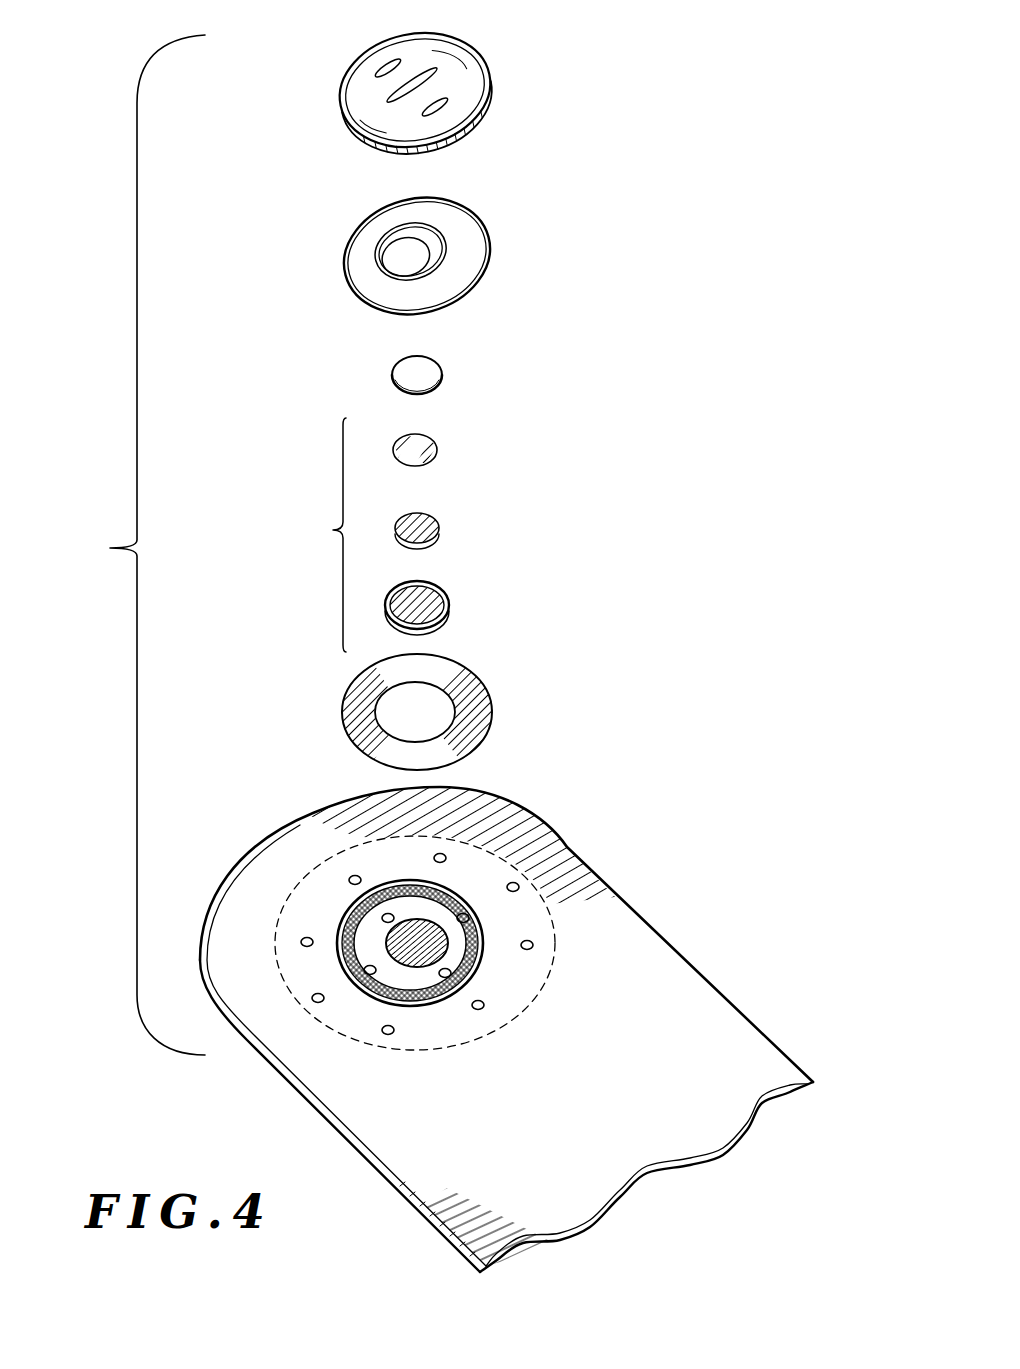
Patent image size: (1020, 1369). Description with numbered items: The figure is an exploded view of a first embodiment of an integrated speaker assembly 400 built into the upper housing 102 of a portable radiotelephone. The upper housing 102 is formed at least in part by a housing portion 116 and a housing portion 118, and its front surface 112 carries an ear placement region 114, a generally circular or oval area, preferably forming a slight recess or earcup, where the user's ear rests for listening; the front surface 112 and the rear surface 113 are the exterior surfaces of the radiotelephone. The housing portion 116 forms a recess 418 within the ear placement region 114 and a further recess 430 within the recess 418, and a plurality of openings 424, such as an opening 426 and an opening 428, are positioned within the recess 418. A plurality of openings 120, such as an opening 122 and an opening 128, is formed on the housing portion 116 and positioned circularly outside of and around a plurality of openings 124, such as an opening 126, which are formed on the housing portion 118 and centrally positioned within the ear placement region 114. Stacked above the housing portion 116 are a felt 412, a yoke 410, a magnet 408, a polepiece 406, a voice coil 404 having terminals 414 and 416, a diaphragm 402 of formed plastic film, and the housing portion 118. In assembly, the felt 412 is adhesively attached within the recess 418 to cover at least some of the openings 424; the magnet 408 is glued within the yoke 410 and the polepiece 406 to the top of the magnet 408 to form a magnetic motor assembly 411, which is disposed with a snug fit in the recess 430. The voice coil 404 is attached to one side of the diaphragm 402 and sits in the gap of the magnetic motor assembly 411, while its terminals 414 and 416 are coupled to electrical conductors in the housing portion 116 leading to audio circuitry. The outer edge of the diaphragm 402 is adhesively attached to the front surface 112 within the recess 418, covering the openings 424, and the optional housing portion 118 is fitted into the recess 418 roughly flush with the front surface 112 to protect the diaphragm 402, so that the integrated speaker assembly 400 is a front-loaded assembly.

The upper housing 102 is at (495, 1029).
The front surface 112 is at (248, 883).
The rear surface 113 is at (279, 1072).
The ear placement region 114 is at (550, 953).
The housing portion 116 is at (365, 1123).
The housing portion 118 is at (431, 83).
The plurality of openings 120 is at (305, 939).
The opening 122 is at (352, 877).
The plurality of openings 124 is at (421, 64).
The opening 126 is at (385, 63).
The opening 128 is at (485, 1003).
The integrated speaker assembly 400 is at (100, 560).
The diaphragm 402 is at (488, 230).
The voice coil 404 is at (420, 377).
The polepiece 406 is at (437, 451).
The magnet 408 is at (439, 529).
The yoke 410 is at (449, 602).
The magnetic motor assembly 411 is at (401, 535).
The felt 412 is at (492, 706).
The terminal 414 is at (445, 365).
The terminal 416 is at (445, 384).
The recess 418 is at (442, 945).
The plurality of openings 424 is at (394, 982).
The opening 426 is at (445, 978).
The opening 428 is at (387, 913).
The recess 430 is at (418, 922).